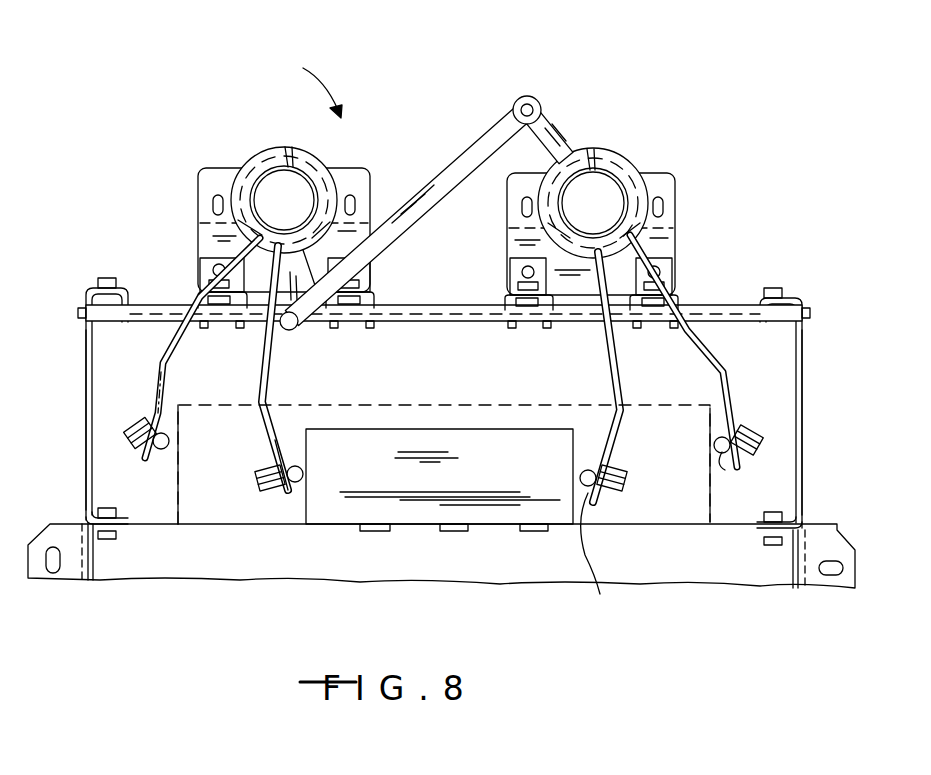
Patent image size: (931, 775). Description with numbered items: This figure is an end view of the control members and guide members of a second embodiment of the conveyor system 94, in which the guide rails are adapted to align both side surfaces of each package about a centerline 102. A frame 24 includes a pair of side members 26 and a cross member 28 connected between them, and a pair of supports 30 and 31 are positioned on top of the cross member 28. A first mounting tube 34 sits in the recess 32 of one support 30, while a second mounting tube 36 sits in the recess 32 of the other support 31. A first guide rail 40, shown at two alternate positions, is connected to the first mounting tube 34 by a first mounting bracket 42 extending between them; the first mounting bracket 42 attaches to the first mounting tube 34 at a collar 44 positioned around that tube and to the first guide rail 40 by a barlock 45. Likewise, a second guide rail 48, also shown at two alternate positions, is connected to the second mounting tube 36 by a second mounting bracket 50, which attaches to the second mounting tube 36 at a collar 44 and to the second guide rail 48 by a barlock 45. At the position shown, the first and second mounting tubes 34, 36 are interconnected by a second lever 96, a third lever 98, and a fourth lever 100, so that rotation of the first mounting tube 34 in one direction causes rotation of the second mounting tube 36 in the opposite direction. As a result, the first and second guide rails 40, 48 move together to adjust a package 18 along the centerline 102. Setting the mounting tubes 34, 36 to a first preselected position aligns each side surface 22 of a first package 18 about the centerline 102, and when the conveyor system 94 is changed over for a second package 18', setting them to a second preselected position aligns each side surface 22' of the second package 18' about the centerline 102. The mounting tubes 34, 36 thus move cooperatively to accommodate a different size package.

The first package 18 is at (441, 568).
The second package 18' is at (443, 567).
The side surface 22 is at (438, 476).
The side surface 22' is at (447, 464).
The frame 24 is at (88, 357).
The side members 26 is at (84, 428).
The cross member 28 is at (428, 308).
The support 30 is at (372, 168).
The support 31 is at (678, 196).
The recess 32 is at (198, 228).
The first mounting tube 34 is at (283, 190).
The second mounting tube 36 is at (598, 192).
The first guide rail 40 is at (170, 464).
The first mounting bracket 42 is at (172, 348).
The collar 44 is at (310, 162).
The barlock 45 is at (148, 422).
The second guide rail 48 is at (730, 465).
The second mounting bracket 50 is at (612, 358).
The conveyor system 94 is at (296, 82).
The second lever 96 is at (300, 330).
The third lever 98 is at (456, 165).
The fourth lever 100 is at (556, 128).
The centerline 102 is at (420, 512).